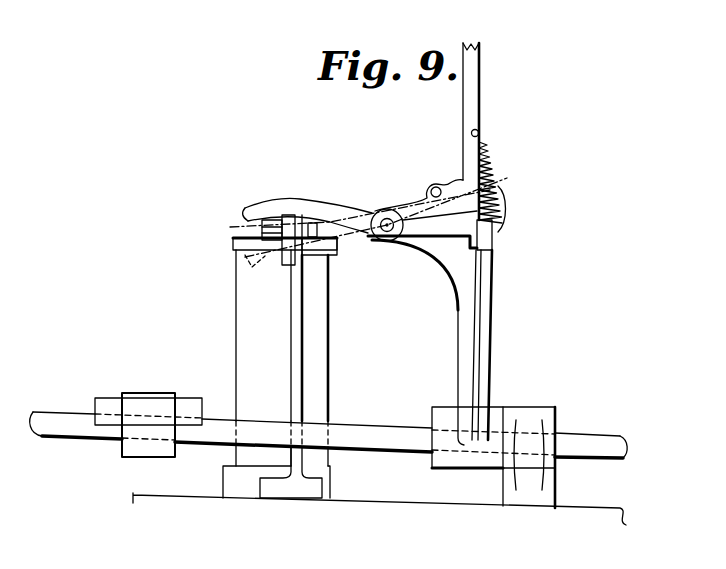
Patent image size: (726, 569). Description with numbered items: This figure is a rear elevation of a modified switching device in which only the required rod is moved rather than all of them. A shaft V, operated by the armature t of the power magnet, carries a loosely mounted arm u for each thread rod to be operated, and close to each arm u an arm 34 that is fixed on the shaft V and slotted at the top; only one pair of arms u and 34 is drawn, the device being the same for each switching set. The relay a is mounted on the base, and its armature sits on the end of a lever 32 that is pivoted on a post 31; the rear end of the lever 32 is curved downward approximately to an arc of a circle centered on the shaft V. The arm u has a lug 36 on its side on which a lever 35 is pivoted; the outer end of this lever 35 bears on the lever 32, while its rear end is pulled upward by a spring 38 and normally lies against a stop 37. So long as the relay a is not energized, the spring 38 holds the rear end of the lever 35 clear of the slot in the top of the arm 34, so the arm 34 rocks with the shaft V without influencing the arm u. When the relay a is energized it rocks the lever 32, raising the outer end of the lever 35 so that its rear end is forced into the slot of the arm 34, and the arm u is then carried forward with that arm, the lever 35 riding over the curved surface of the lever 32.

The post 31 is at (298, 373).
The lever 32 is at (262, 228).
The arm 34 is at (478, 272).
The lever 35 is at (281, 206).
The lug 36 is at (470, 203).
The stop 37 is at (431, 189).
The spring 38 is at (483, 183).
The relay a is at (242, 320).
The armature of the power magnet t is at (148, 410).
The arm u is at (475, 117).
The shaft V is at (583, 445).